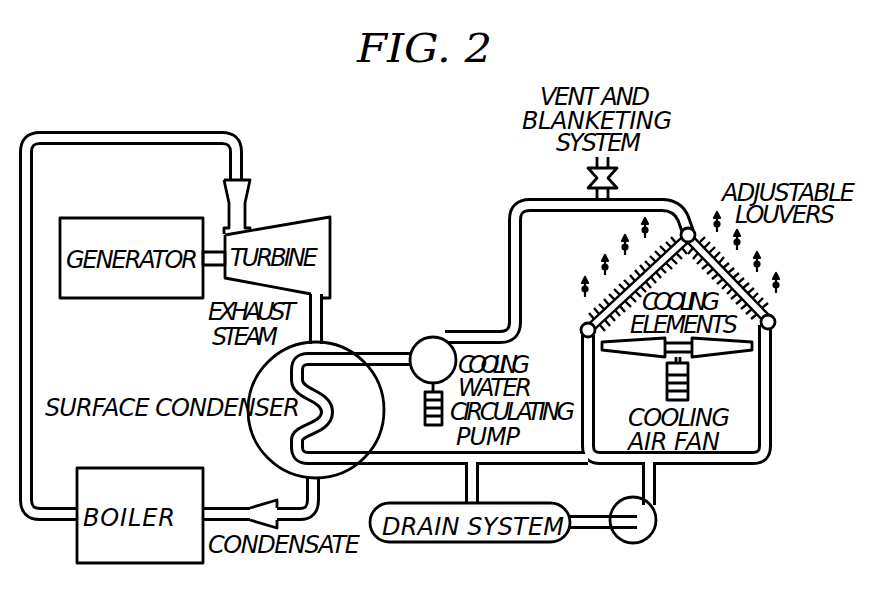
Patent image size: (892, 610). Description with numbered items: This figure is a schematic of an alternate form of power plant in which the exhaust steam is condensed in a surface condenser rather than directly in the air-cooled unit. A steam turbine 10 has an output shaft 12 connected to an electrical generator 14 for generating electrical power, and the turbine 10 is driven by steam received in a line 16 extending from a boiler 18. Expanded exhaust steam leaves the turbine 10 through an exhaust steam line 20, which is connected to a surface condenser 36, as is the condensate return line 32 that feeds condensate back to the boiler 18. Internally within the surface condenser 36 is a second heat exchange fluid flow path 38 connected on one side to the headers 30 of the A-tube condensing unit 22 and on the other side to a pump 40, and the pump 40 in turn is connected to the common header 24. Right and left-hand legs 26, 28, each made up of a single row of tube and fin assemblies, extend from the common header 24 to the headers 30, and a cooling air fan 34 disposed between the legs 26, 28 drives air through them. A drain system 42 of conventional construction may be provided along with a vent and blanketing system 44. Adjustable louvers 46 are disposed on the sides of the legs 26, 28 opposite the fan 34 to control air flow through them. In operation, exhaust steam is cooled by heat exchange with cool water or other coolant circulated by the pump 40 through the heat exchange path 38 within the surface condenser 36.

The steam turbine 10 is at (305, 213).
The output shaft 12 is at (211, 247).
The electrical generator 14 is at (141, 218).
The line 16 is at (163, 131).
The boiler 18 is at (157, 467).
The exhaust steam line 20 is at (322, 317).
The A-tube condenser 22 is at (772, 247).
The common header 24 is at (693, 224).
The right-hand leg 26 is at (768, 304).
The left-hand leg 28 is at (615, 295).
The header 30 is at (582, 322).
The condensate return line 32 is at (221, 506).
The cooling air fan 34 is at (688, 368).
The surface condenser 36 is at (337, 472).
The second heat exchange fluid flow path 38 is at (333, 410).
The pump 40 is at (443, 333).
The drain system 42 is at (535, 540).
The vent and blanketing system 44 is at (623, 182).
The adjustable louvers 46 is at (760, 263).